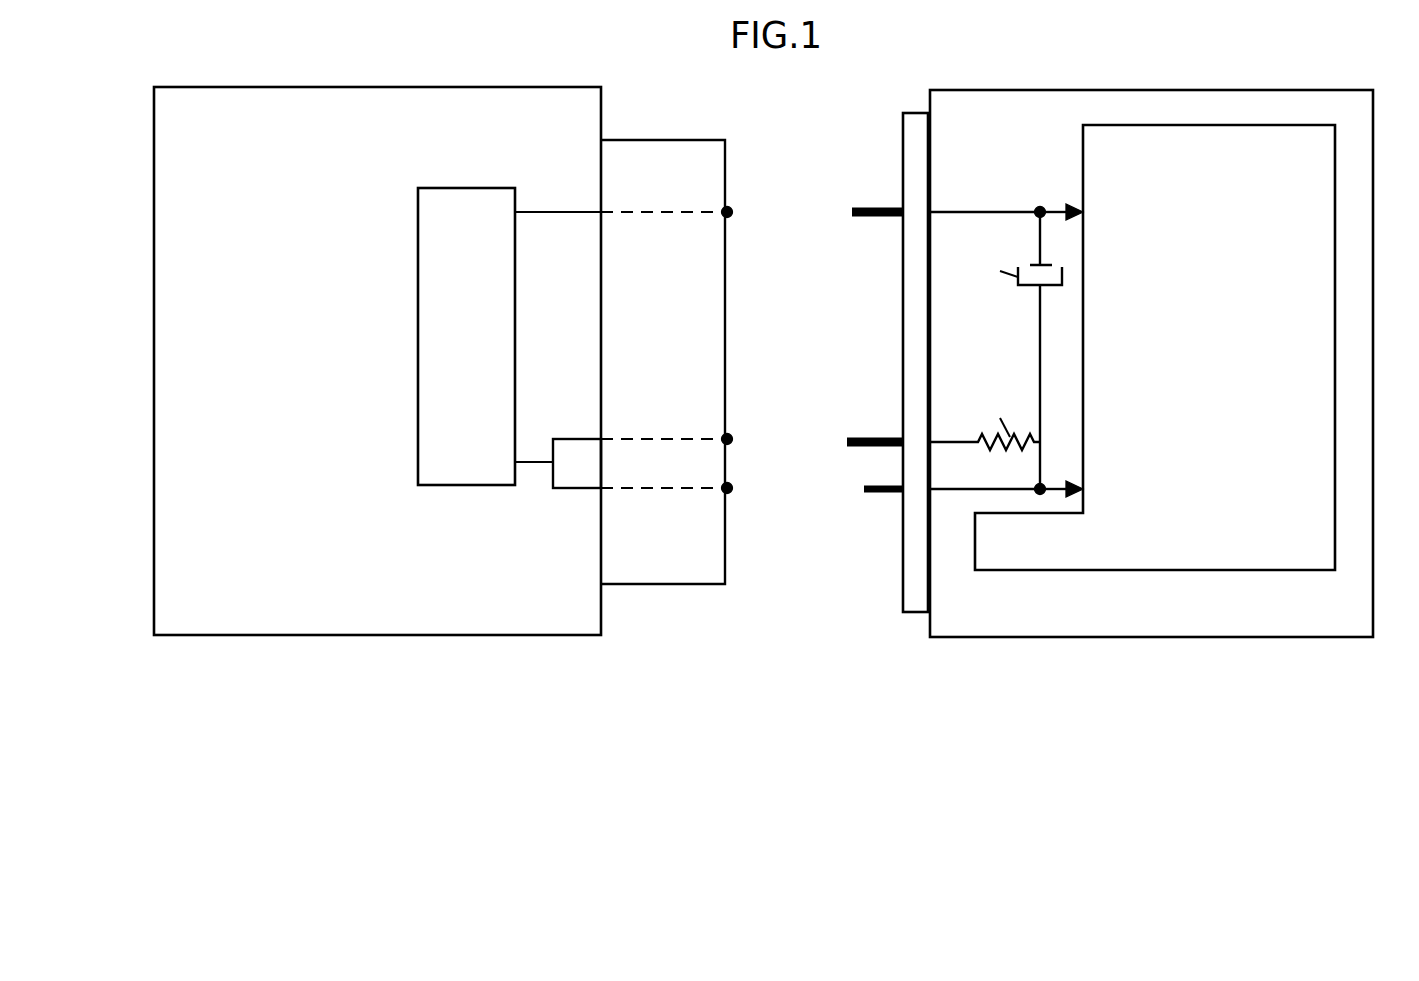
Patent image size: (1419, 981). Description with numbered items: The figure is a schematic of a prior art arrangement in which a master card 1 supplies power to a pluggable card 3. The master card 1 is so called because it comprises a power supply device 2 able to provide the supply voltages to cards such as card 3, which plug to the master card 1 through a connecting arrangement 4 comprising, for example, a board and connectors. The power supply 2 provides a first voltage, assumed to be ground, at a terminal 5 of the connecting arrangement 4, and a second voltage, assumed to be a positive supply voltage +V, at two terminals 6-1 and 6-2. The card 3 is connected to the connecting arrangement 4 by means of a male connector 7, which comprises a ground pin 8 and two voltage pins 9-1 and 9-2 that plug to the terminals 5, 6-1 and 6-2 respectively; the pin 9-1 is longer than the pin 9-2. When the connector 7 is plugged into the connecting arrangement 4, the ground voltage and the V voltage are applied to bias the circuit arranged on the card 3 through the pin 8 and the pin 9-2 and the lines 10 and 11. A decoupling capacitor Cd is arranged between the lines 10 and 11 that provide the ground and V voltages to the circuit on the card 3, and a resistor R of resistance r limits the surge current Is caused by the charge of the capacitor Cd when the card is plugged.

The master card 1 is at (312, 636).
The power supply device 2 is at (485, 487).
The card 3 is at (1338, 638).
The connecting arrangement 4 is at (673, 622).
The terminal 5 is at (717, 218).
The terminal 6-1 is at (719, 431).
The terminal 6-2 is at (693, 488).
The male connector 7 is at (907, 631).
The ground pin 8 is at (884, 208).
The voltage pin 9-1 is at (943, 433).
The voltage pin 9-2 is at (947, 507).
The line 10 is at (1064, 208).
The line 11 is at (1062, 484).